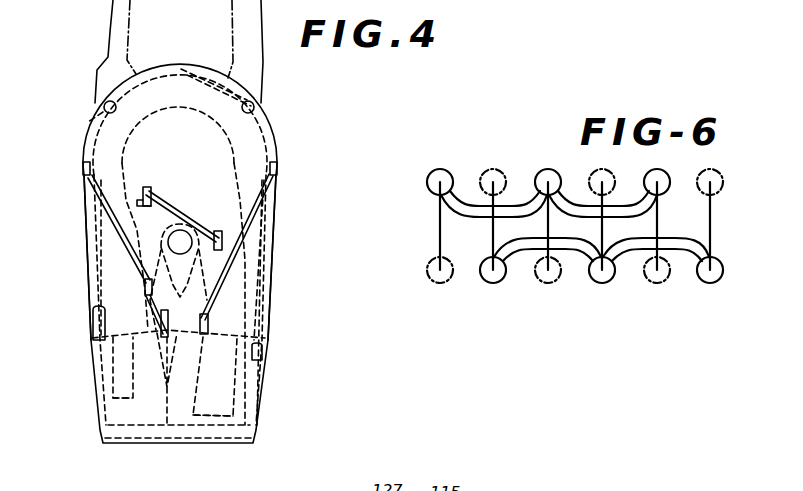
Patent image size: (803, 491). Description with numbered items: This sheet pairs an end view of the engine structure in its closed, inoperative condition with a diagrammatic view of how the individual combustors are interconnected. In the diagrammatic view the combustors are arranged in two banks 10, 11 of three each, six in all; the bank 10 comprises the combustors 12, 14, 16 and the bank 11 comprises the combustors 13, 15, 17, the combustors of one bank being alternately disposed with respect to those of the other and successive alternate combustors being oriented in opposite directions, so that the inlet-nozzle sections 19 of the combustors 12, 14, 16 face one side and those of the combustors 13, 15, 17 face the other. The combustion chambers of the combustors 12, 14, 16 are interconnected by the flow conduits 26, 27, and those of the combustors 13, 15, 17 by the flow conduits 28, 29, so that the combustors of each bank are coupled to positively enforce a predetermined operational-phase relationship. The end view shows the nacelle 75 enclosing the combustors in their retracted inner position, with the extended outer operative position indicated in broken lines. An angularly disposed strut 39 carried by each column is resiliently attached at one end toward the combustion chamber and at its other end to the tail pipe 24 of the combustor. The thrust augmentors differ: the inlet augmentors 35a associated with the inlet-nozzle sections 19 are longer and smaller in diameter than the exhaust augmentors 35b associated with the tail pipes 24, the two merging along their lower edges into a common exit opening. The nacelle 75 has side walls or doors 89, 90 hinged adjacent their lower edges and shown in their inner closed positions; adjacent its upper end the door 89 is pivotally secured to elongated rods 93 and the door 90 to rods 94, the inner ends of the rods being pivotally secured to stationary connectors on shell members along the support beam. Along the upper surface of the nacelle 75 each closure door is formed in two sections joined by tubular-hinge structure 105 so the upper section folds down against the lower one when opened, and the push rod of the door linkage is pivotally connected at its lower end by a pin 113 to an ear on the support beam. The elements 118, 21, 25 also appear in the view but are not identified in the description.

In FIG. 4, the nacelle 75 is at (282, 134).
In FIG. 4, the pivot pin 118 is at (104, 107).
In FIG. 4, the tubular-hinge structure 105 is at (256, 104).
In FIG. 4, the strut 39 is at (167, 201).
In FIG. 4, the rods 94 is at (112, 232).
In FIG. 4, the elongated rods 93 is at (245, 232).
In FIG. 4, the side wall or door 90 is at (86, 287).
In FIG. 4, the side wall or door 89 is at (271, 297).
In FIG. 4, the pin 113 is at (248, 280).
In FIG. 4, the inlet-nozzle section 19 is at (112, 371).
In FIG. 4, the inlet augmentor 35a is at (105, 407).
In FIG. 4, the exhaust augmentor 35b is at (257, 389).
In FIG. 4, the base 21 is at (123, 402).
In FIG. 4, the tail pipe 24 is at (255, 411).
In FIG. 4, the bottom plate 25 is at (217, 420).
In FIG. 6, the bank 10 is at (490, 288).
In FIG. 6, the bank 11 is at (447, 161).
In FIG. 6, the combustor 12 is at (501, 283).
In FIG. 6, the combustor 13 is at (429, 180).
In FIG. 6, the combustor 14 is at (600, 285).
In FIG. 6, the combustor 15 is at (557, 158).
In FIG. 6, the combustor 16 is at (709, 284).
In FIG. 6, the combustor 17 is at (662, 177).
In FIG. 6, the flow conduit 26 is at (541, 240).
In FIG. 6, the flow conduit 27 is at (617, 245).
In FIG. 6, the flow conduit 28 is at (462, 216).
In FIG. 6, the flow conduit 29 is at (557, 218).